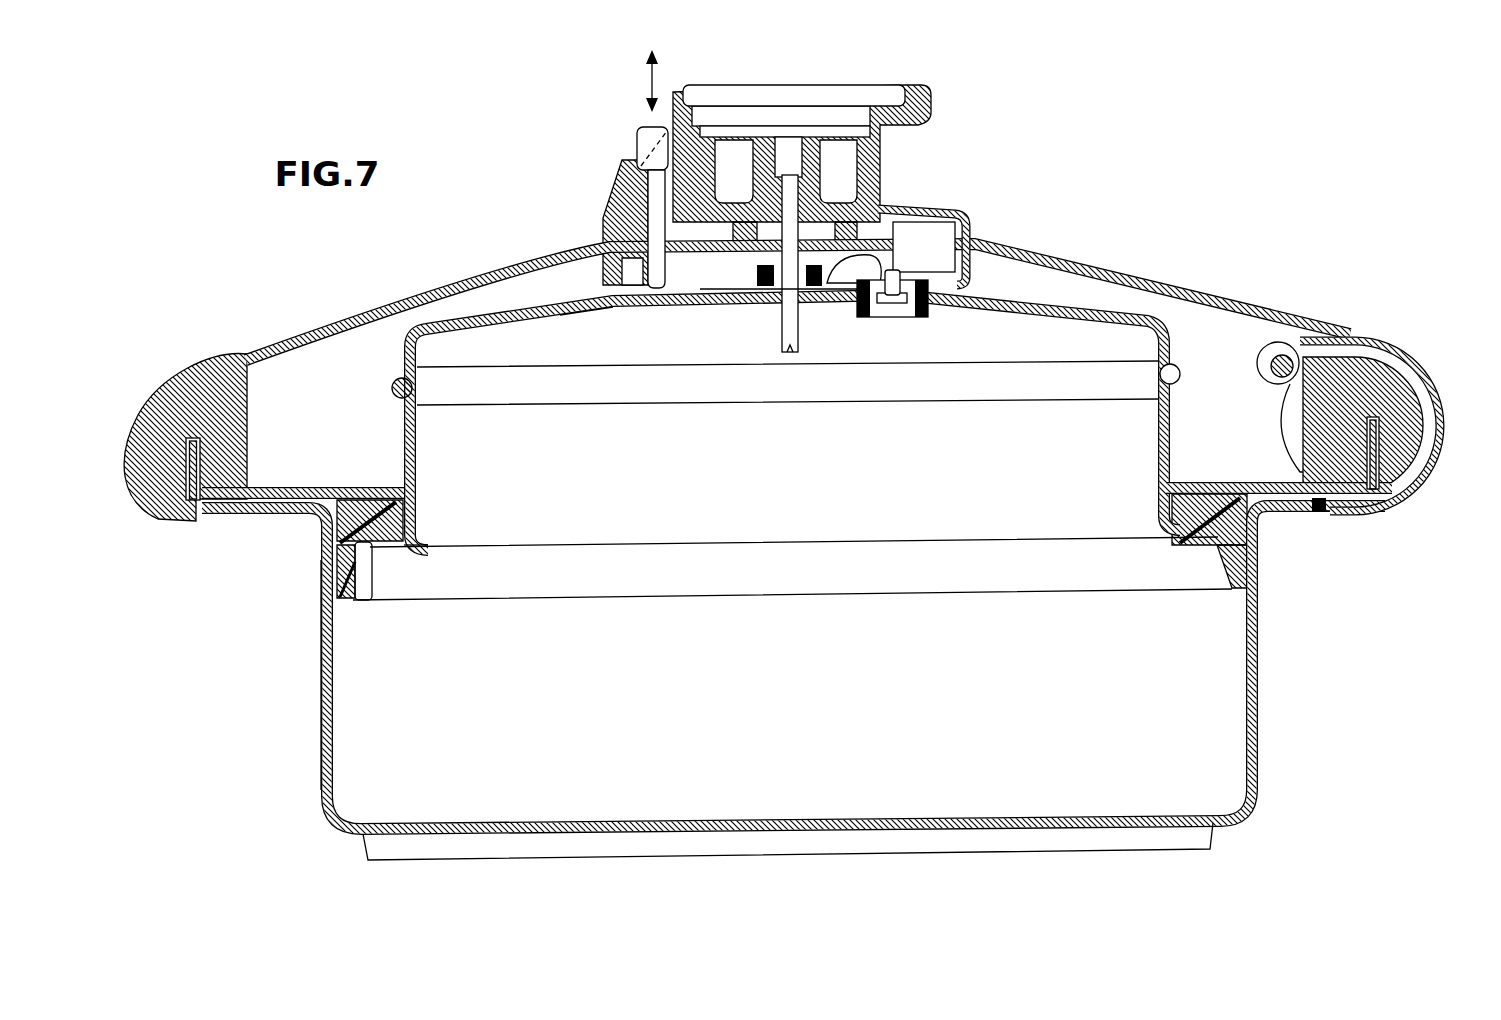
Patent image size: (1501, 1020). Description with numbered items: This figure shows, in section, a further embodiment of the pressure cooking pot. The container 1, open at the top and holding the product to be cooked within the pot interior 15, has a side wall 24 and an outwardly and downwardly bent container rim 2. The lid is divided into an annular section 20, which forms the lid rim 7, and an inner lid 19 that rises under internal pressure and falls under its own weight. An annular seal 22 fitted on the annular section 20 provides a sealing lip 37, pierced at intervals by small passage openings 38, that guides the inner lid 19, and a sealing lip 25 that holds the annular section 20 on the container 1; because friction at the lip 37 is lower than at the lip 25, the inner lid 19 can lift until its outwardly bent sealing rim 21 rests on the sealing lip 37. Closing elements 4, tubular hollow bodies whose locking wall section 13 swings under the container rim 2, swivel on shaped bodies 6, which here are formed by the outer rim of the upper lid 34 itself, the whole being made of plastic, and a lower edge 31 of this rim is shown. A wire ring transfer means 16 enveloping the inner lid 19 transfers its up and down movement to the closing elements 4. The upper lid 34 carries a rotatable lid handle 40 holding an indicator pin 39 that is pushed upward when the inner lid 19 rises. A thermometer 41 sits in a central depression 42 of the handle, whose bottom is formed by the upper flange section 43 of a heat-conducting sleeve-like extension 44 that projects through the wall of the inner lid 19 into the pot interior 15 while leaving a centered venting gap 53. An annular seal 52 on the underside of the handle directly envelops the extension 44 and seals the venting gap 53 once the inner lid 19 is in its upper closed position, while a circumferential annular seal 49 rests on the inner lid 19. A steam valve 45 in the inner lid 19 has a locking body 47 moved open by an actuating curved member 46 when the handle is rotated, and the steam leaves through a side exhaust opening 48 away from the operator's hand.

The container 1 is at (322, 680).
The container rim 2 is at (1284, 496).
The closing element 4 is at (1395, 352).
The shaped support body 6 is at (150, 394).
The lid rim 7 is at (1355, 500).
The locking wall section 13 is at (1267, 365).
The pot interior 15 is at (556, 705).
The transfer means 16 is at (393, 389).
The inner lid 19 is at (416, 447).
The annular section 20 is at (1223, 480).
The sealing rim 21 is at (404, 548).
The annular seal 22 is at (364, 549).
The vessel side wall 24 is at (340, 714).
The sealing lip 25 is at (349, 600).
The handle lower edge 31 is at (1405, 480).
The upper lid 34 is at (1090, 262).
The sealing lip 37 is at (418, 523).
The passage openings 38 is at (1162, 504).
The indicator pin 39 is at (664, 268).
The lid handle 40 is at (937, 128).
The thermometer 41 is at (858, 90).
The central depression 42 is at (716, 150).
The upper flange section 43 is at (788, 128).
The extension 44 is at (788, 352).
The steam valve 45 is at (934, 304).
The actuating curved member 46 is at (860, 262).
The locking body 47 is at (893, 306).
The side exhaust opening 48 is at (963, 228).
The circumferential annular seal 49 is at (612, 302).
The annular seal 52 is at (755, 297).
The venting gap 53 is at (772, 292).